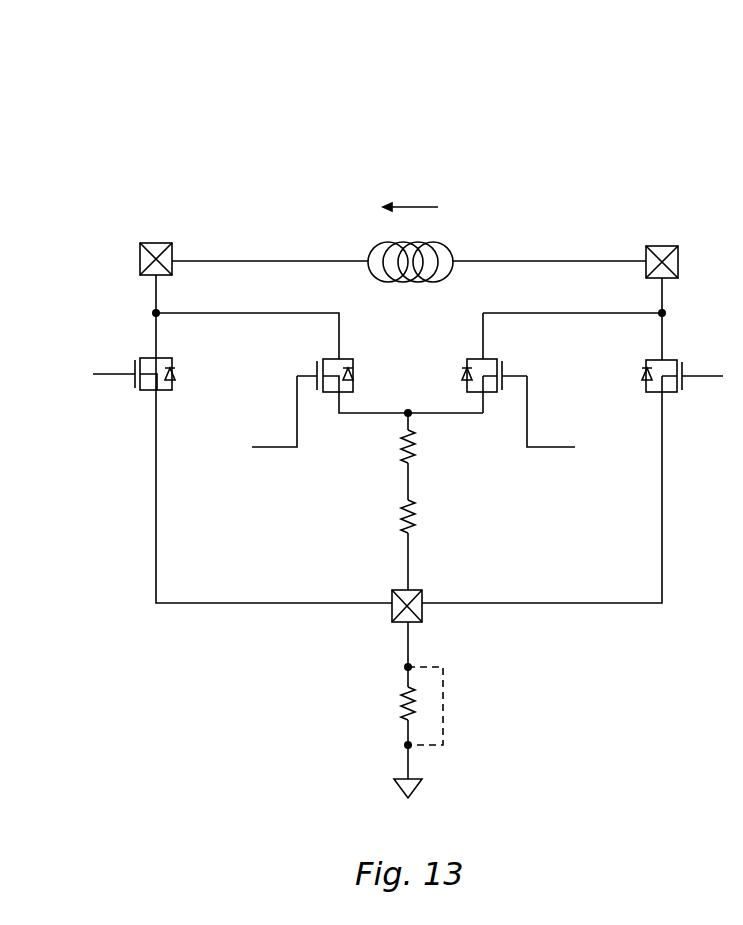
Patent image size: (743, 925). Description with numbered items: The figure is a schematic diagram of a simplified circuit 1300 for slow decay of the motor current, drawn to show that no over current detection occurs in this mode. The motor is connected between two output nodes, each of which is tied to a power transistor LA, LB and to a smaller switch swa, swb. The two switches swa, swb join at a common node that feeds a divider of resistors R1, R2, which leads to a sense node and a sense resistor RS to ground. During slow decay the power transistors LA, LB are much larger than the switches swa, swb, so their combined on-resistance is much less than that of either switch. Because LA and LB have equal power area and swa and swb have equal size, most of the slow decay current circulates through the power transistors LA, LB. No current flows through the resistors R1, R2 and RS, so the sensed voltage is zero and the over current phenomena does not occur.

The simplified circuit 1300 is at (103, 157).
The power transistor LA is at (142, 361).
The power transistor LB is at (675, 363).
The switch swa is at (341, 363).
The switch swb is at (480, 363).
The resistor R1 is at (427, 447).
The resistor R2 is at (427, 516).
The sense resistor RS is at (385, 703).